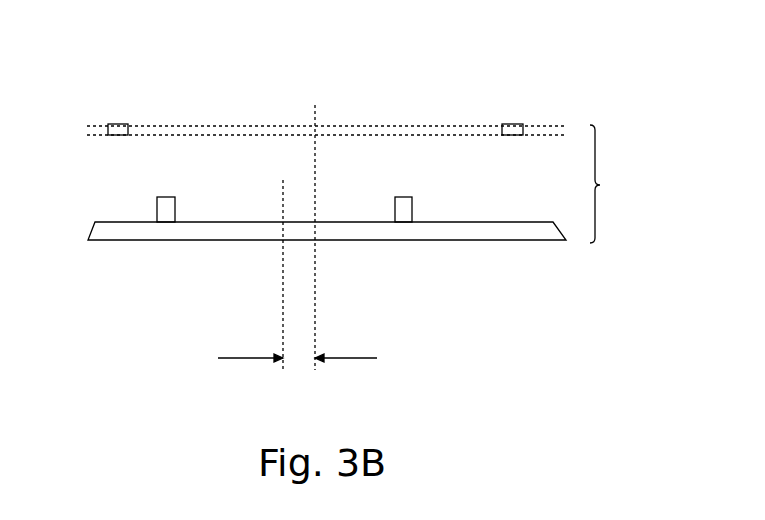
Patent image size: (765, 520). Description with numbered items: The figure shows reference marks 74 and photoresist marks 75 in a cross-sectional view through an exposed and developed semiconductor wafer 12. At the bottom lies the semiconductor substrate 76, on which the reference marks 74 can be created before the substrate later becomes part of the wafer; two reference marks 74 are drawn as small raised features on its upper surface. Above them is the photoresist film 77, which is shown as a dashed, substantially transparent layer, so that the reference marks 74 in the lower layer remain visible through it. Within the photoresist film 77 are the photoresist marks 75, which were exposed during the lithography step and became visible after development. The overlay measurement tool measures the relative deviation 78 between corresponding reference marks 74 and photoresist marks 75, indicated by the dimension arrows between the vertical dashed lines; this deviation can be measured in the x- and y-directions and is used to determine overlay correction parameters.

The exposed and developed semiconductor wafer 12 is at (600, 185).
The reference marks 74 is at (168, 197).
The photoresist marks 75 is at (118, 124).
The semiconductor substrate 76 is at (558, 228).
The photoresist film 77 is at (445, 126).
The relative deviation 78 is at (312, 238).